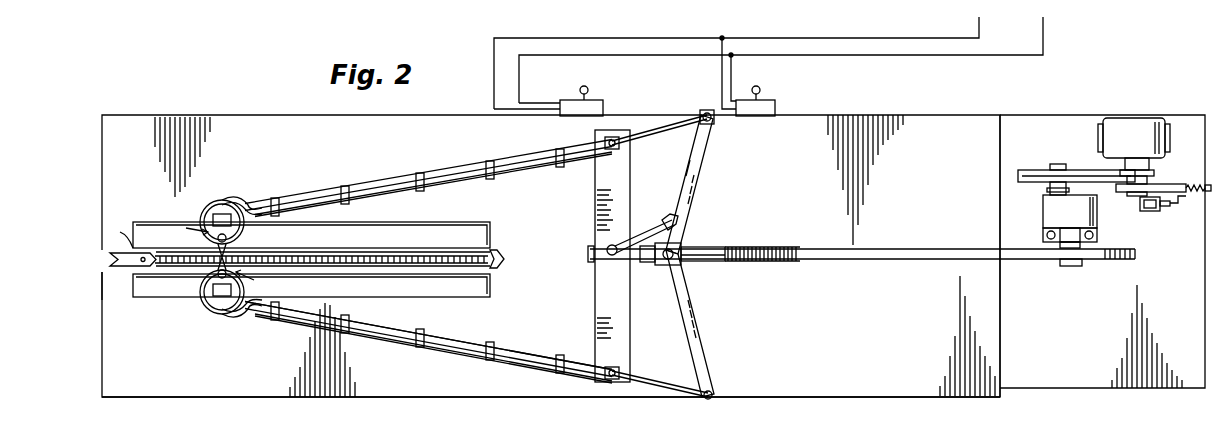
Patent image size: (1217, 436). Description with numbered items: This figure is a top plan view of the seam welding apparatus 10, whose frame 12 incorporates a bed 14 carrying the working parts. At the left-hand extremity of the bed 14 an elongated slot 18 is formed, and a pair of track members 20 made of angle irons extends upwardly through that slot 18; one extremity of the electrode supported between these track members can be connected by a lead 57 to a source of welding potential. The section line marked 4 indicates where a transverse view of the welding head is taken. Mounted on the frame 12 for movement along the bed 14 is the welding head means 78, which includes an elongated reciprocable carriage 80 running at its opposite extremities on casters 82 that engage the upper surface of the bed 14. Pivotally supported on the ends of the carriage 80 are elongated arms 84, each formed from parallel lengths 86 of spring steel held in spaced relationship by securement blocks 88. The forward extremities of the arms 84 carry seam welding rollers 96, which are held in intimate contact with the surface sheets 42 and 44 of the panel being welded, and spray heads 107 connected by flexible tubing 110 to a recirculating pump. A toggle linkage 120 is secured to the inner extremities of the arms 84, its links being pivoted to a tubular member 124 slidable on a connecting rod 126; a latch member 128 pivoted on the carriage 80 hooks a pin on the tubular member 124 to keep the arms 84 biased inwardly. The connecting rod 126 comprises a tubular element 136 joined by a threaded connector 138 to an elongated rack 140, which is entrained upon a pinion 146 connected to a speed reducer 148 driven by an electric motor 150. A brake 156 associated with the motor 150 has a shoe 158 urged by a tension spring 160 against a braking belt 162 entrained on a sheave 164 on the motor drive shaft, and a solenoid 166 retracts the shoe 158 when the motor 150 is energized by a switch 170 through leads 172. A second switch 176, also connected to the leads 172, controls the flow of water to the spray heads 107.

The section line 4- 4 is at (223, 248).
The apparatus 10 is at (305, 402).
The frame 12 is at (481, 399).
The bed 14 is at (545, 398).
The elongated slot 18 is at (105, 274).
The track members 20 is at (506, 256).
The surface sheet 42 is at (366, 276).
The surface sheet 44 is at (380, 248).
The lead 57 is at (133, 235).
The welding head means 78 is at (406, 354).
The carriage 80 is at (600, 290).
The casters 82 is at (598, 140).
The arms 84 is at (471, 164).
The parallel lengths 86 is at (406, 180).
The securement blocks 88 is at (496, 166).
The seam welding roller 96 is at (238, 252).
The spray heads 107 is at (222, 200).
The flexible tubing 110 is at (246, 190).
The toggle linkage 120 is at (714, 363).
The tubular member 124 is at (700, 250).
The connecting rod 126 is at (709, 270).
The latch member 128 is at (641, 229).
The tubular element 136 is at (720, 250).
The threaded connector 138 is at (740, 250).
The elongated rack 140 is at (936, 248).
The pinion 146 is at (1071, 267).
The speed reducer 148 is at (1098, 226).
The electric motor 150 is at (1136, 126).
The brake 156 is at (1164, 214).
The shoe 158 is at (1178, 186).
The tension spring 160 is at (1192, 196).
The braking belt 162 is at (1166, 186).
The sheave 164 is at (1120, 194).
The solenoid 166 is at (1153, 216).
The switch 170 is at (568, 100).
The leads 172 is at (885, 50).
The switch 176 is at (784, 104).